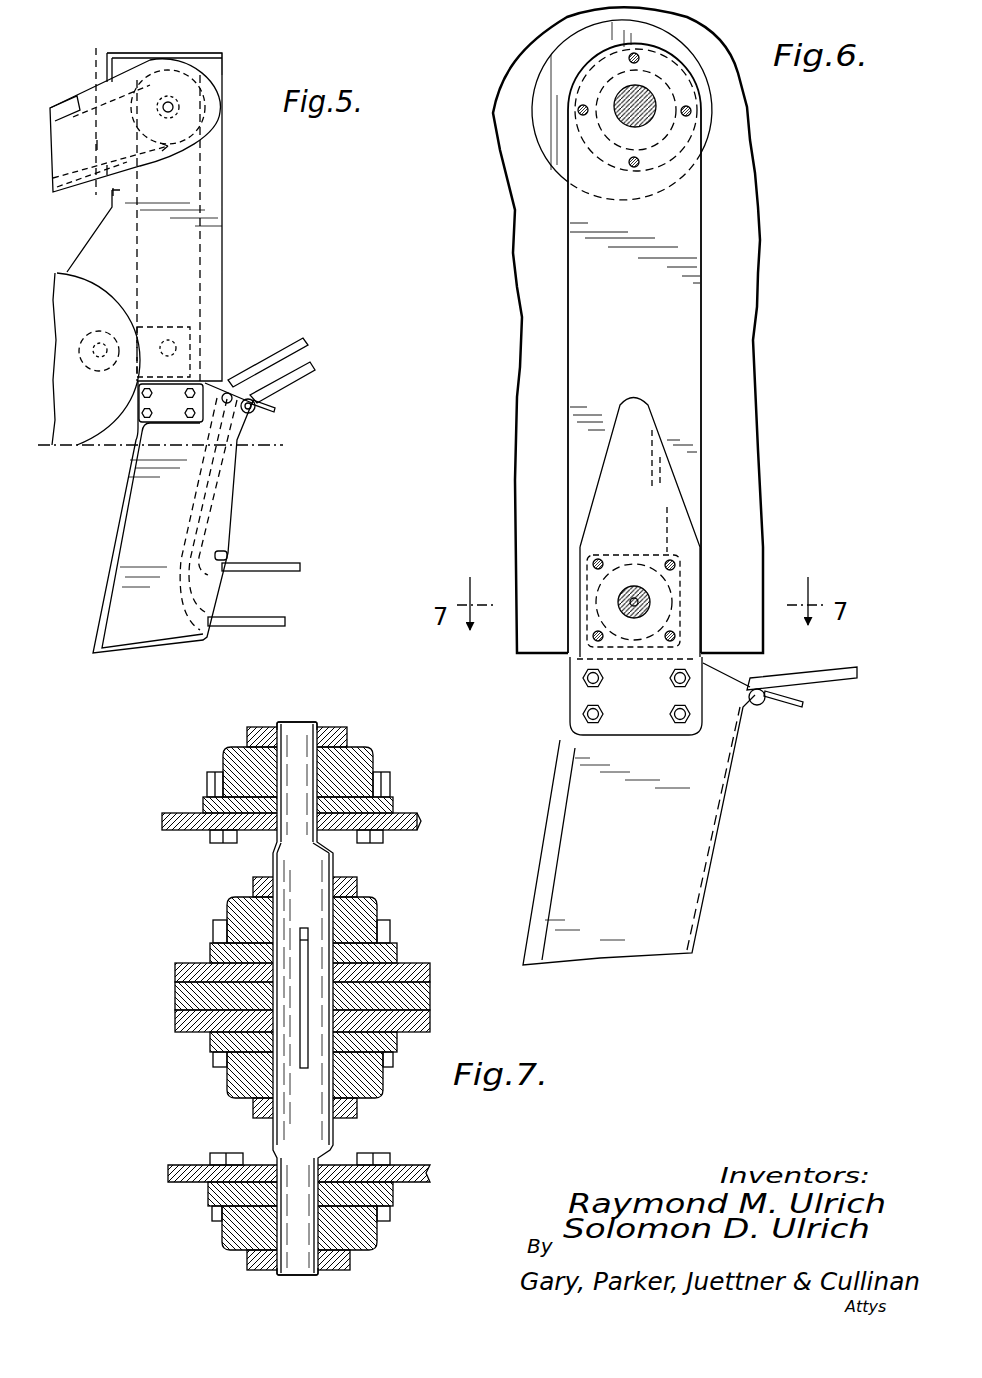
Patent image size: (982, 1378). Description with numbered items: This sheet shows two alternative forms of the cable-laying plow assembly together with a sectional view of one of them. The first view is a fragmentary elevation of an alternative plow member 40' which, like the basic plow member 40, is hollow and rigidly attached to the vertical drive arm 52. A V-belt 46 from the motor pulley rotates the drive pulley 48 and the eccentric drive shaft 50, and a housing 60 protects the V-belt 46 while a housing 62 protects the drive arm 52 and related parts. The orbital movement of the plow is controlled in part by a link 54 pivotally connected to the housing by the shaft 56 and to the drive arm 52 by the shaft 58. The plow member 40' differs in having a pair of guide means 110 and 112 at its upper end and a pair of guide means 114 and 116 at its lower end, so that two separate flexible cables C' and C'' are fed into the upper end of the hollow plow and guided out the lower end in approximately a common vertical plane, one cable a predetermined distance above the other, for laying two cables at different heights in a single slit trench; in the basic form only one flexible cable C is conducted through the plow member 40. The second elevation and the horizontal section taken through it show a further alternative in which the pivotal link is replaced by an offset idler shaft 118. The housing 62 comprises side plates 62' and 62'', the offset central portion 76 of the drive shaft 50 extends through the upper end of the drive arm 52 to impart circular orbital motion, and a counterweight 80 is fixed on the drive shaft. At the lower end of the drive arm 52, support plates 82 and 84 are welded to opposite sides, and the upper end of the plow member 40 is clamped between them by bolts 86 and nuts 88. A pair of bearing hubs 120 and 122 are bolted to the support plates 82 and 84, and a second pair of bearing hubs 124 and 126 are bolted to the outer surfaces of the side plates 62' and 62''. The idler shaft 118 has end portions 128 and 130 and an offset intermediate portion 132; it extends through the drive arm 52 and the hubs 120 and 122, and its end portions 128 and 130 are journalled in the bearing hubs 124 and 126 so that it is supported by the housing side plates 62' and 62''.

In FIG. 6, the plow member 40 is at (639, 814).
In FIG. 5, the plow member 40' is at (153, 517).
In FIG. 5, the V-belt 46 is at (101, 108).
In FIG. 5, the drive pulley 48 is at (222, 78).
In FIG. 6, the eccentric drive shaft 50 is at (613, 121).
In FIG. 5, the vertical drive arm 52 is at (203, 210).
In FIG. 6, the vertical drive arm 52 is at (706, 313).
In FIG. 7, the vertical drive arm 52 is at (173, 994).
In FIG. 5, the link 54 is at (148, 327).
In FIG. 5, the shaft 56 is at (107, 340).
In FIG. 5, the shaft 58 is at (199, 316).
In FIG. 5, the housing 60 is at (75, 105).
In FIG. 5, the housing 62 is at (170, 217).
In FIG. 7, the housing 62 is at (281, 805).
In FIG. 7, the side plate 62' is at (278, 1191).
In FIG. 6, the side plate 62'' is at (609, 330).
In FIG. 7, the side plate 62'' is at (425, 797).
In FIG. 6, the offset central portion 76 is at (653, 100).
In FIG. 6, the counterweight 80 is at (565, 50).
In FIG. 6, the support plate 82 is at (592, 519).
In FIG. 7, the support plate 82 is at (177, 1025).
In FIG. 7, the support plate 84 is at (178, 970).
In FIG. 6, the bolts 86 is at (670, 712).
In FIG. 6, the nuts 88 is at (583, 710).
In FIG. 5, the guide means 110 is at (226, 384).
In FIG. 5, the guide means 112 is at (257, 401).
In FIG. 5, the guide means 114 is at (228, 554).
In FIG. 5, the guide means 116 is at (222, 597).
In FIG. 6, the offset idler shaft 118 is at (624, 585).
In FIG. 7, the offset idler shaft 118 is at (271, 862).
In FIG. 7, the bearing hub 120 is at (237, 1085).
In FIG. 6, the bearing hub 122 is at (635, 577).
In FIG. 7, the bearing hub 122 is at (363, 905).
In FIG. 7, the bearing hub 124 is at (237, 1230).
In FIG. 7, the bearing hub 126 is at (237, 763).
In FIG. 7, the end portion 128 is at (300, 1277).
In FIG. 6, the end portion 130 is at (615, 610).
In FIG. 7, the end portion 130 is at (299, 728).
In FIG. 6, the offset intermediate portion 132 is at (648, 603).
In FIG. 7, the offset intermediate portion 132 is at (327, 933).
In FIG. 6, the flexible cable C is at (802, 669).
In FIG. 5, the flexible cable C' is at (268, 347).
In FIG. 5, the flexible cable C'' is at (304, 363).